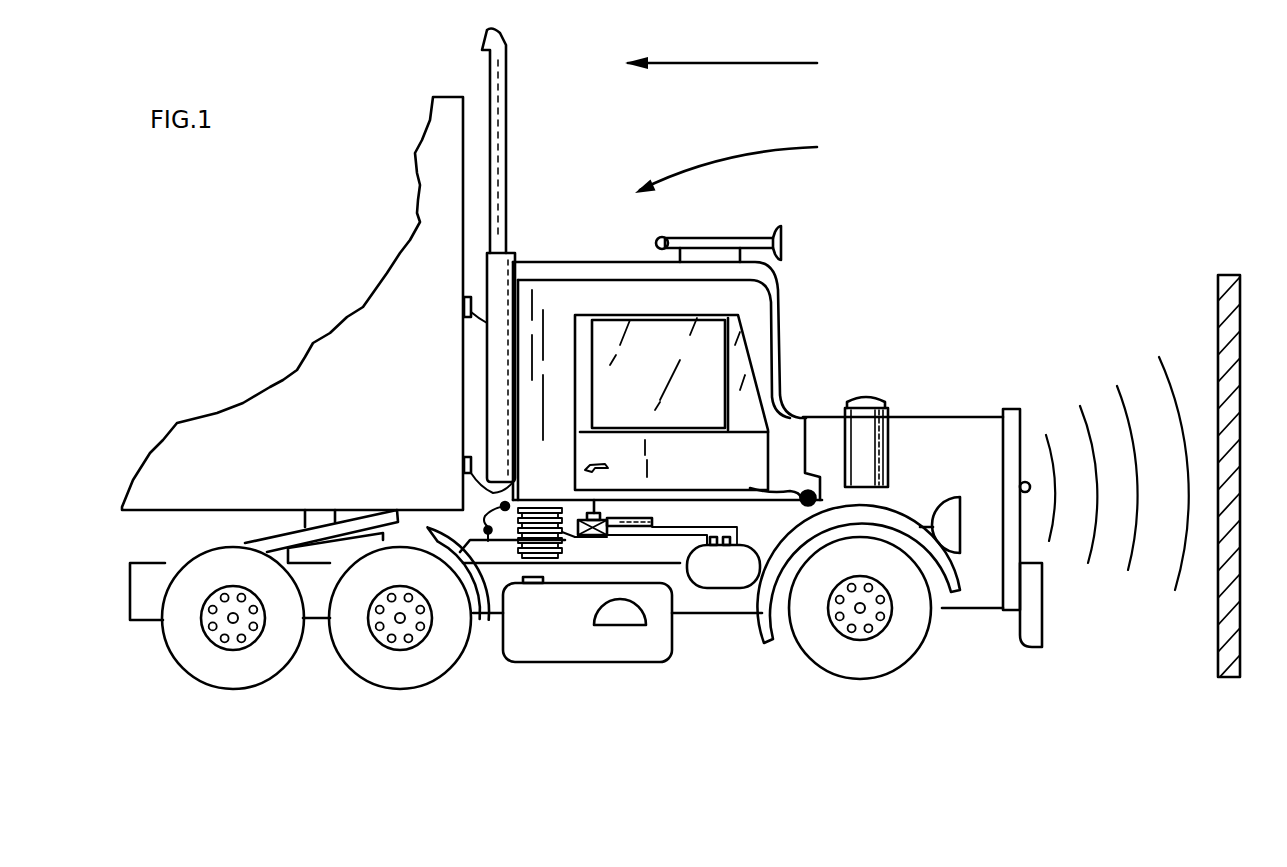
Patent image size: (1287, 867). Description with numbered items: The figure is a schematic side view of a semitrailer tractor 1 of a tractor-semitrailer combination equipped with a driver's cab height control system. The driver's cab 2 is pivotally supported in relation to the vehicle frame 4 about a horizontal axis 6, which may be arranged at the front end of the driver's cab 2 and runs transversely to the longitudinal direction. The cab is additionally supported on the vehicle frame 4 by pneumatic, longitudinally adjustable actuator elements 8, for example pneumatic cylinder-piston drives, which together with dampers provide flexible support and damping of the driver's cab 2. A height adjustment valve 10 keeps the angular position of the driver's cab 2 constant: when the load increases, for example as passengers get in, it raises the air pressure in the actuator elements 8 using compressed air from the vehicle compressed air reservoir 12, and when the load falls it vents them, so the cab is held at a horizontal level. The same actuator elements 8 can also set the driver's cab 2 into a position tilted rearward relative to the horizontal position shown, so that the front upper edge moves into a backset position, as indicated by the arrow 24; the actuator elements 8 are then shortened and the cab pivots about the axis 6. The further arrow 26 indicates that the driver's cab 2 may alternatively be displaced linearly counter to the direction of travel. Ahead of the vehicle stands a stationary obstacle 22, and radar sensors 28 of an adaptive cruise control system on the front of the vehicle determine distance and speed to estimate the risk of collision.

The semitrailer tractor 1 is at (928, 410).
The driver's cab 2 is at (590, 288).
The vehicle frame 4 is at (720, 613).
The horizontal axis 6 is at (750, 488).
The pneumatic actuator element 8 is at (543, 507).
The height adjustment valve 10 is at (610, 520).
The vehicle compressed air reservoir 12 is at (745, 588).
The obstacle 22 is at (1224, 680).
The arrow 24 is at (743, 155).
The further arrow 26 is at (735, 64).
The radar sensor 28 is at (1024, 481).